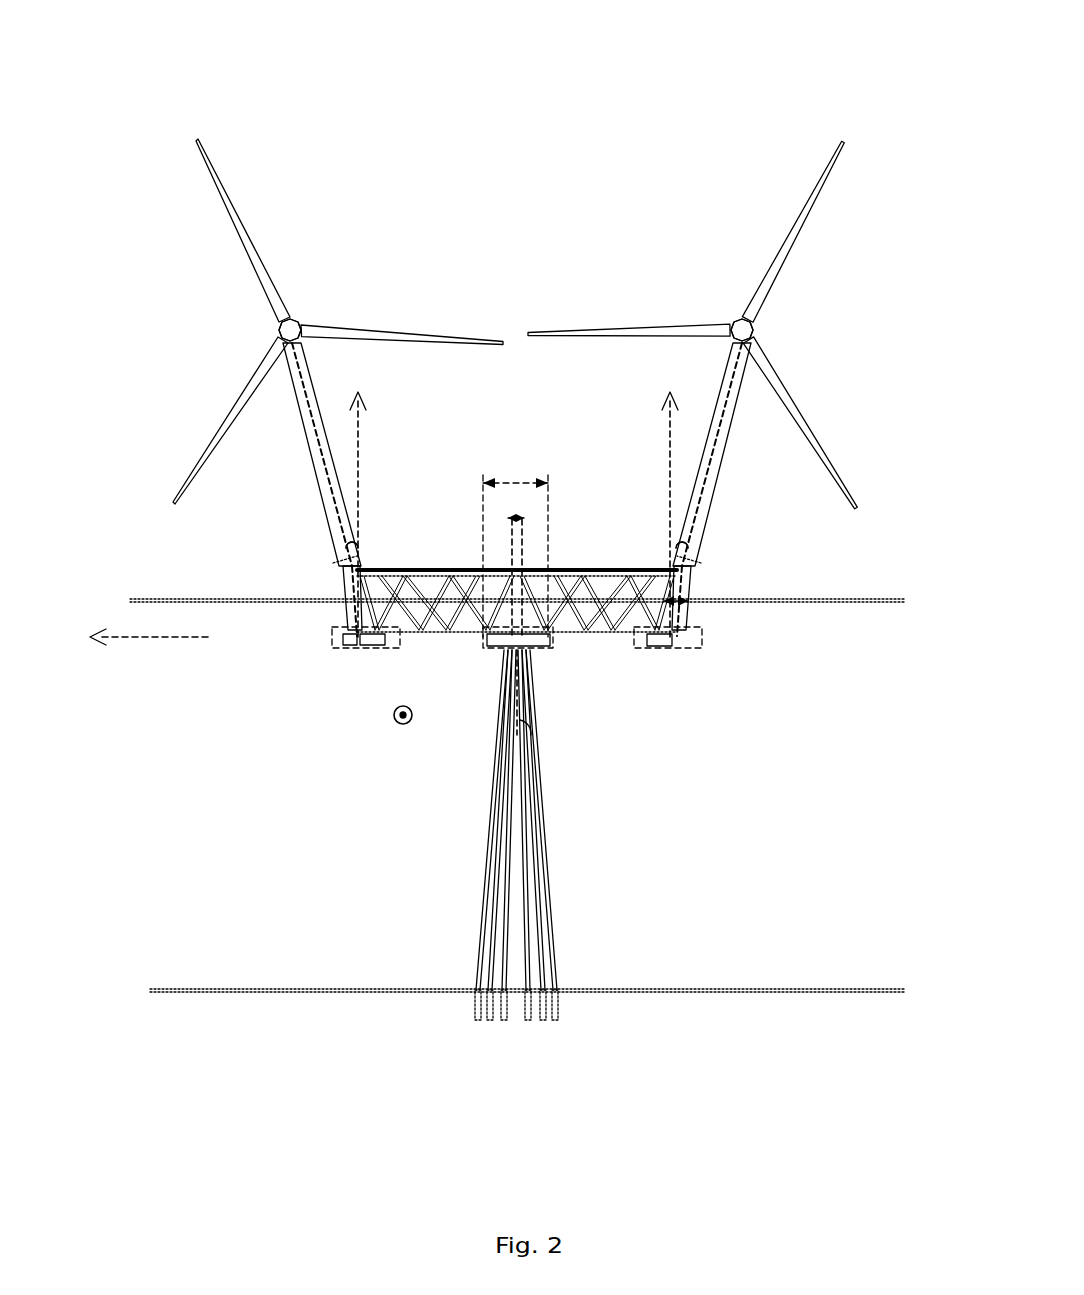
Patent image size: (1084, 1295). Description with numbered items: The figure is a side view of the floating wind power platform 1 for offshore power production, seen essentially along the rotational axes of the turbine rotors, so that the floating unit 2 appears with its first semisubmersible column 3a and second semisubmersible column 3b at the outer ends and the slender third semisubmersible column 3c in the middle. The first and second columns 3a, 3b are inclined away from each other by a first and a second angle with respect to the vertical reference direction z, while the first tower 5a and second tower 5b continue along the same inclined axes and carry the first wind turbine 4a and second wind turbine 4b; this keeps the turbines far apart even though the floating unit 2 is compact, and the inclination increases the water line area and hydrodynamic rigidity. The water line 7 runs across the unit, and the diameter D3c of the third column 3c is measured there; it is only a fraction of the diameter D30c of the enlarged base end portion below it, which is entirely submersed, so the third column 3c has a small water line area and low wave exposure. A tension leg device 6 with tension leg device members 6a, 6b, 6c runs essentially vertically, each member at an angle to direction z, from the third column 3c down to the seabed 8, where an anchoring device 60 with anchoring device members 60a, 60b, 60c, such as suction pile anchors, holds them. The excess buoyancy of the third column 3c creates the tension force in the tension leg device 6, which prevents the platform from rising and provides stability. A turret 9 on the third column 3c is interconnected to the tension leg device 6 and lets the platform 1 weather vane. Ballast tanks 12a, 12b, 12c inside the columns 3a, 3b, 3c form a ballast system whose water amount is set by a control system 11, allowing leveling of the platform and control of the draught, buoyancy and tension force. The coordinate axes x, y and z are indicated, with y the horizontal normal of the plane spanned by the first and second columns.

The floating wind power platform 1 is at (312, 92).
The floating unit 2 is at (880, 512).
The first semisubmersible column 3a is at (342, 628).
The second semisubmersible column 3b is at (690, 622).
The third semisubmersible column 3c is at (538, 645).
The first wind turbine 4a is at (293, 320).
The second wind turbine 4b is at (750, 312).
The first tower 5a is at (303, 422).
The second tower 5b is at (705, 522).
The tension leg device 6 is at (412, 871).
The tension leg device member 6a is at (505, 957).
The tension leg device member 6b is at (550, 913).
The tension leg device member 6c is at (528, 942).
The water line 7 is at (130, 600).
The seabed 8 is at (152, 990).
The turret 9 is at (515, 652).
The control system 11 is at (345, 650).
The ballast tank 12a is at (378, 650).
The ballast tank 12b is at (665, 646).
The ballast tank 12c is at (515, 652).
The anchoring device 60 is at (405, 1022).
The anchoring device member 60a is at (502, 1025).
The anchoring device member 60b is at (558, 1002).
The anchoring device member 60c is at (525, 1022).
The diameter of base end portion D30c is at (525, 480).
The diameter of third semisubmersible column D3c is at (524, 518).
The horizontal direction x is at (152, 641).
The horizontal direction y is at (393, 724).
The reference direction z is at (362, 445).